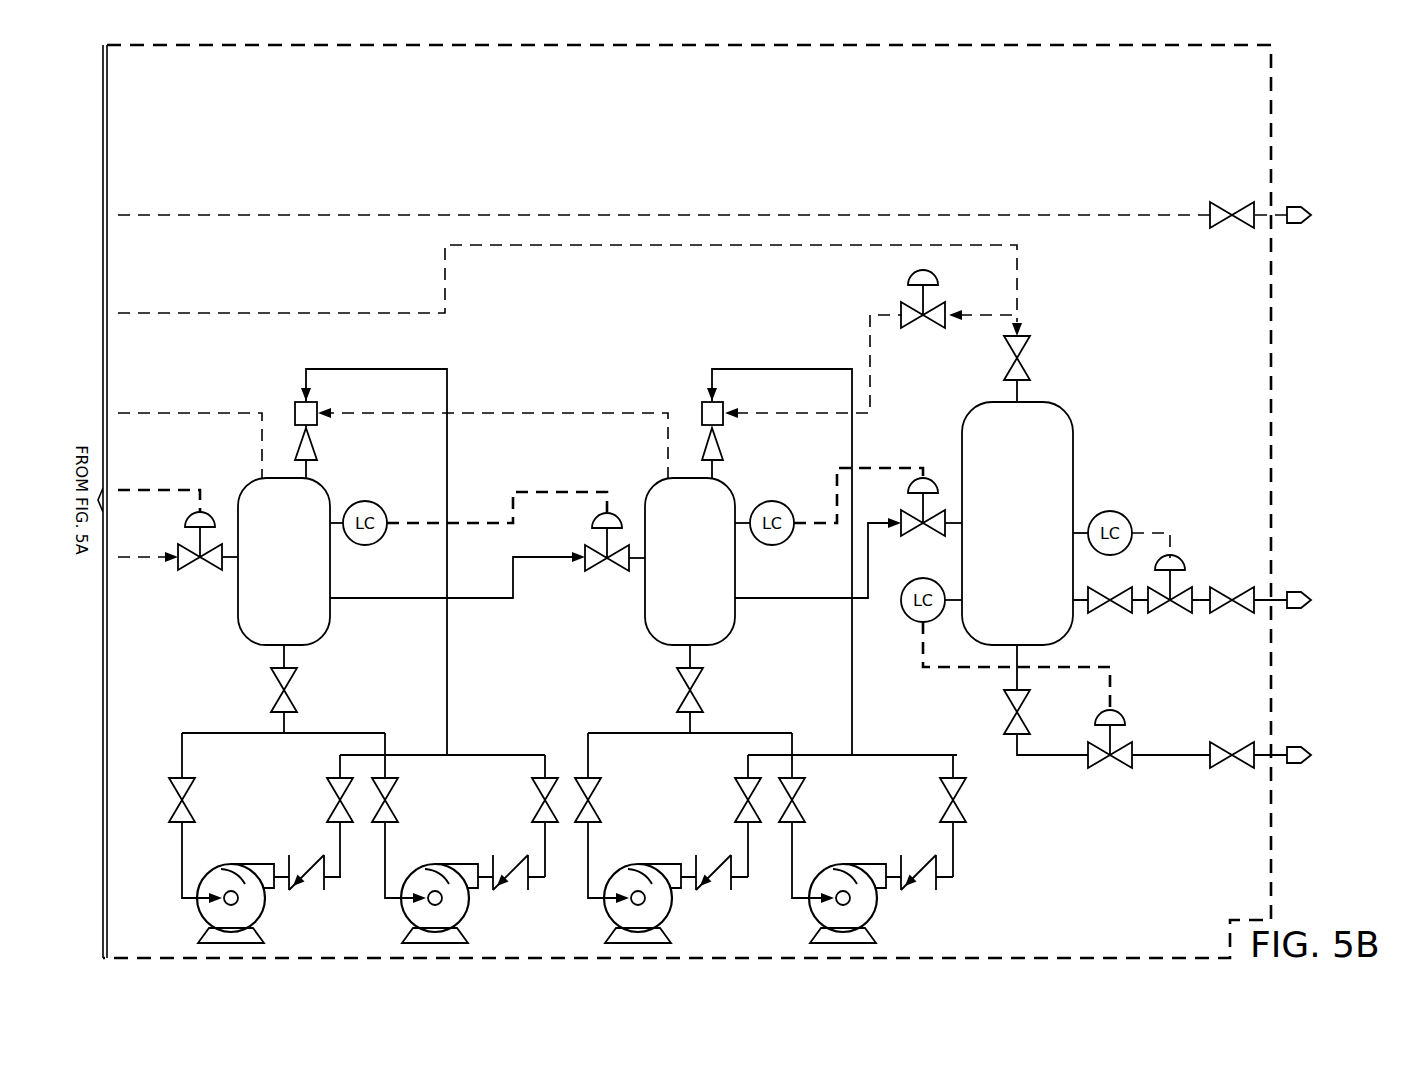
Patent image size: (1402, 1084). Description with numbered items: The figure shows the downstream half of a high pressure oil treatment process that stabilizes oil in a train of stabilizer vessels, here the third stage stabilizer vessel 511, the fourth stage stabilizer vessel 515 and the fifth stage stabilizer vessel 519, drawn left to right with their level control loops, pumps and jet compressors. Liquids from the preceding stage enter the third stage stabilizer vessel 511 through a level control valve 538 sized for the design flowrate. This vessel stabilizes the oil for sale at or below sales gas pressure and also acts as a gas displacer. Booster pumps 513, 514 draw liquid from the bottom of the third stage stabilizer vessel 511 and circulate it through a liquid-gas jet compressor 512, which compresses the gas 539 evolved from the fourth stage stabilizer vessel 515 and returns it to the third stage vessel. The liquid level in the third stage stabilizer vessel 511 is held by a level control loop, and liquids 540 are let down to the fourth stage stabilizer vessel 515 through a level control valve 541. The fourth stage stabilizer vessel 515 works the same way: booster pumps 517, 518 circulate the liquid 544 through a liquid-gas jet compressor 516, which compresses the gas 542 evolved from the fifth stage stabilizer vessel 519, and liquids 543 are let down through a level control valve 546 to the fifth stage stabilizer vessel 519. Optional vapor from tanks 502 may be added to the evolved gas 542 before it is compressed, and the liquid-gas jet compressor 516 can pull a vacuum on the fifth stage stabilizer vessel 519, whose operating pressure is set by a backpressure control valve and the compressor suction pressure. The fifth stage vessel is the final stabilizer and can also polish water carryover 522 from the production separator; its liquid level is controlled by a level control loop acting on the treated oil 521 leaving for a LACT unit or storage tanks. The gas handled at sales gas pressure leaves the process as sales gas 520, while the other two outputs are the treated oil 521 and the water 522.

The vapor from tanks 502 is at (446, 276).
The third stage stabilizer vessel 511 is at (268, 648).
The liquid-gas jet compressor 512 is at (294, 406).
The booster pump 513 is at (263, 908).
The booster pump 514 is at (467, 908).
The fourth stage stabilizer vessel 515 is at (716, 648).
The liquid-gas jet compressor 516 is at (700, 406).
The booster pump 517 is at (670, 908).
The booster pump 518 is at (875, 908).
The fifth stage stabilizer vessel 519 is at (1075, 482).
The sales gas 520 is at (1296, 206).
The treated oil 521 is at (1297, 612).
The water carryover 522 is at (1297, 767).
The level control valve 538 is at (192, 572).
The evolved gas 539 is at (499, 412).
The liquids 540 is at (386, 600).
The level control valve 541 is at (600, 572).
The evolved gas 542 is at (869, 346).
The liquids 543 is at (797, 600).
The liquid 544 is at (676, 684).
The level control valve 546 is at (912, 538).